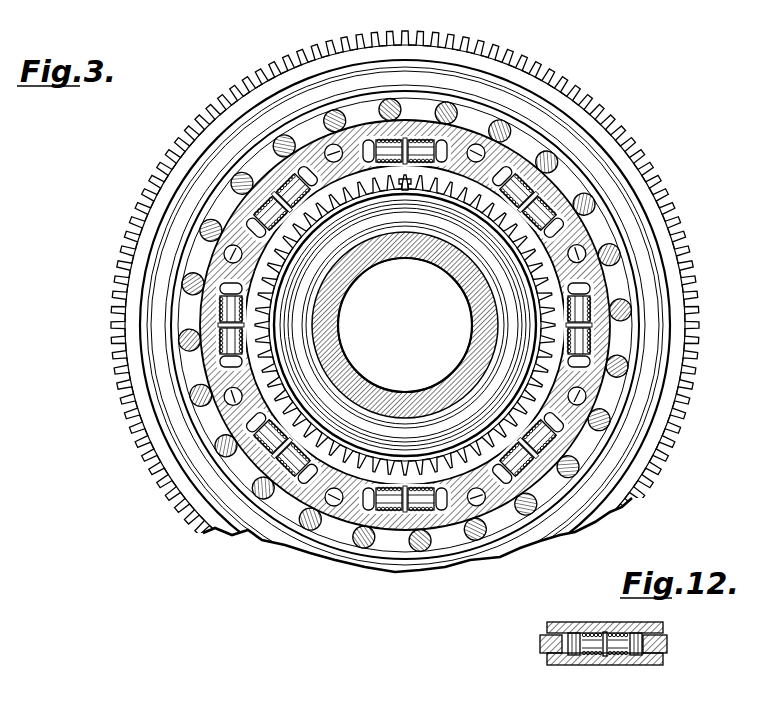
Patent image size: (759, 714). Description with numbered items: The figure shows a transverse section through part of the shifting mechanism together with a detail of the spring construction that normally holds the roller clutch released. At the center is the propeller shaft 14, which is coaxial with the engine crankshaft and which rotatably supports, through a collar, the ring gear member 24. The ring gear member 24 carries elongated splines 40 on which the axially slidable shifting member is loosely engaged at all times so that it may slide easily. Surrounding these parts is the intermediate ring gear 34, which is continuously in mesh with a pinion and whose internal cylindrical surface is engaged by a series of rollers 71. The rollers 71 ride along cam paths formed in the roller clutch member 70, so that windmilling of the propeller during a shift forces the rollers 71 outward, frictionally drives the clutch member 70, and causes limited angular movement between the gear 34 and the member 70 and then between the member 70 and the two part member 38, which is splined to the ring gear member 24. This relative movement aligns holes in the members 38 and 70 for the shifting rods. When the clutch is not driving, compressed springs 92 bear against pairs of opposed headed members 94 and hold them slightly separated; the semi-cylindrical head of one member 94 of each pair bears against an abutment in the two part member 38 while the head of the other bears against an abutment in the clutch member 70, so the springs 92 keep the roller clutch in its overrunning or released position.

In FIG. 3, the propeller shaft 14 is at (344, 350).
In FIG. 3, the ring gear member 24 is at (412, 465).
In FIG. 3, the intermediate ring gear 34 is at (150, 464).
In FIG. 3, the two part member 38 is at (543, 493).
In FIG. 12, the two part member 38 is at (560, 623).
In FIG. 3, the elongated splines 40 is at (423, 467).
In FIG. 3, the roller clutch member 70 is at (292, 497).
In FIG. 12, the roller clutch member 70 is at (668, 645).
In FIG. 3, the rollers 71 is at (305, 526).
In FIG. 3, the compressed springs 92 is at (391, 513).
In FIG. 12, the compressed springs 92 is at (605, 660).
In FIG. 3, the headed members 94 is at (338, 517).
In FIG. 12, the headed members 94 is at (572, 663).